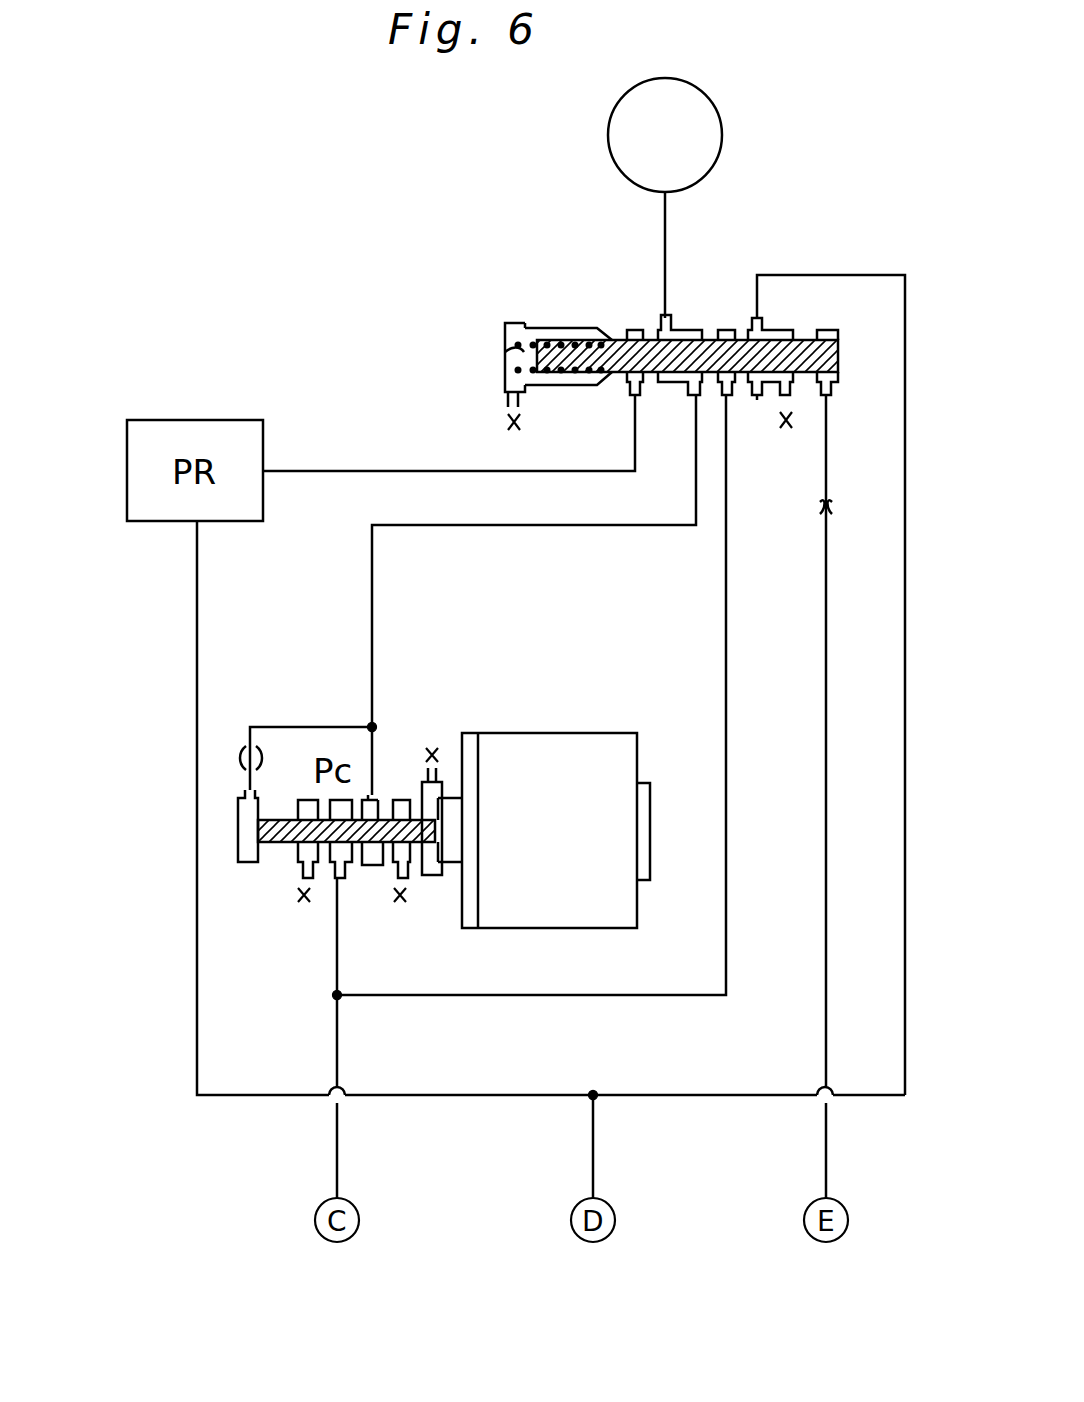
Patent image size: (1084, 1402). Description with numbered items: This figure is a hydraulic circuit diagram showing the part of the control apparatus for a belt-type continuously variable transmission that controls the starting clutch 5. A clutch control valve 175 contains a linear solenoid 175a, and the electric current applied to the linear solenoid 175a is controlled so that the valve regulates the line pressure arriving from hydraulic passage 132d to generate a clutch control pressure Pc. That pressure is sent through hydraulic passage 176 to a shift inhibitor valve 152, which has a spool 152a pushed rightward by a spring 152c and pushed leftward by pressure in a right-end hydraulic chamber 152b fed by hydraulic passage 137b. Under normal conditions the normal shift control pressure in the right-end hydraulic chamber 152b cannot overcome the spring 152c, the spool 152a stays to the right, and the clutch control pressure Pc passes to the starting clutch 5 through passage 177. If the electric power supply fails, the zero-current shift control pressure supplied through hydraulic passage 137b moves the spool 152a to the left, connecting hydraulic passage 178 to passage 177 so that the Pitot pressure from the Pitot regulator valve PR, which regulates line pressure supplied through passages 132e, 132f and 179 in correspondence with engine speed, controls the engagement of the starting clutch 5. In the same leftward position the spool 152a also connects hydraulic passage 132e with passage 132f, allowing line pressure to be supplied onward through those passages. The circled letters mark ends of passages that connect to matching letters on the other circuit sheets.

The starting clutch 5 is at (682, 156).
The shift inhibitor valve 152 is at (600, 305).
The spool 152a is at (750, 396).
The right-end hydraulic chamber 152b is at (826, 332).
The spring 152c is at (505, 362).
The clutch control valve 175 is at (517, 706).
The linear solenoid 175a is at (597, 849).
The hydraulic passage 176 is at (372, 614).
The passage 177 is at (667, 243).
The hydraulic passage 178 is at (342, 471).
The passage 179 is at (430, 1095).
The hydraulic passage 132d is at (337, 1152).
The hydraulic passage 132e is at (560, 965).
The passage 132f is at (667, 1098).
The hydraulic passage 137b is at (826, 1012).